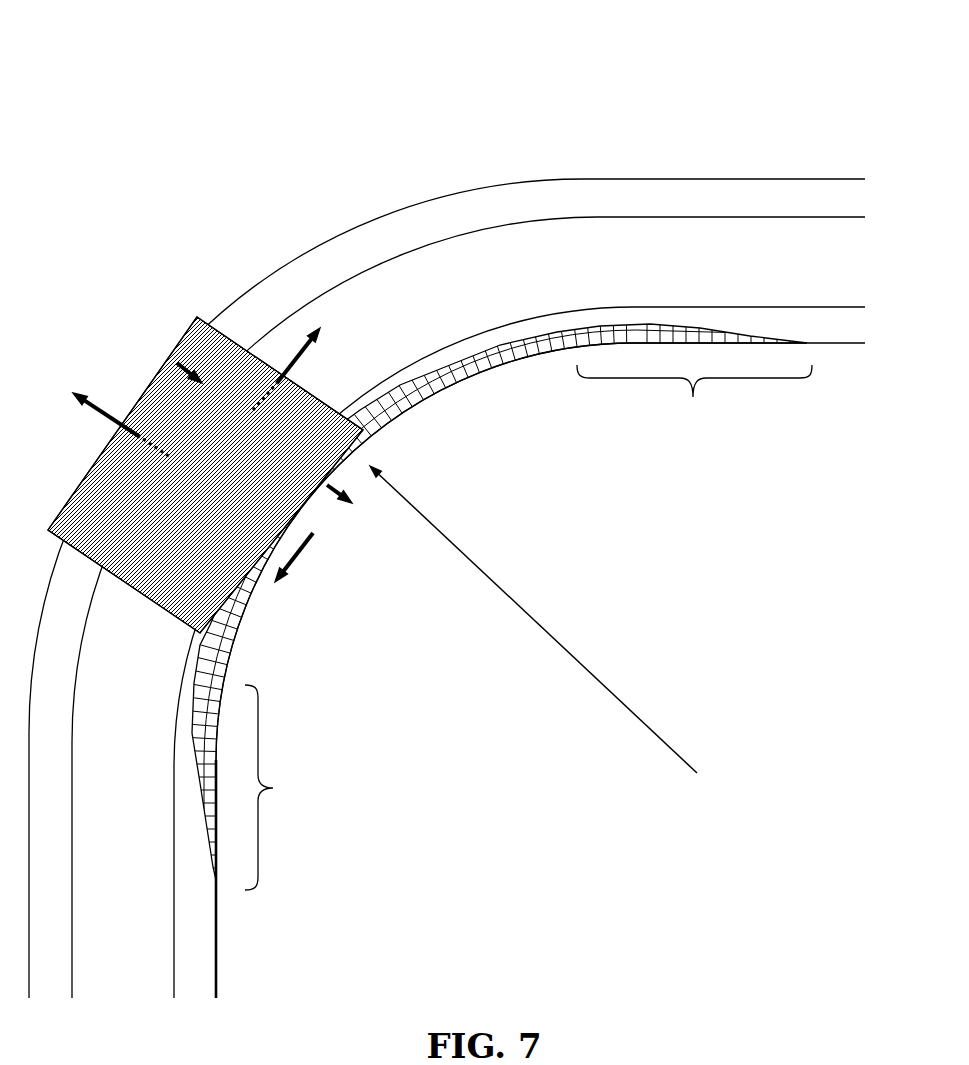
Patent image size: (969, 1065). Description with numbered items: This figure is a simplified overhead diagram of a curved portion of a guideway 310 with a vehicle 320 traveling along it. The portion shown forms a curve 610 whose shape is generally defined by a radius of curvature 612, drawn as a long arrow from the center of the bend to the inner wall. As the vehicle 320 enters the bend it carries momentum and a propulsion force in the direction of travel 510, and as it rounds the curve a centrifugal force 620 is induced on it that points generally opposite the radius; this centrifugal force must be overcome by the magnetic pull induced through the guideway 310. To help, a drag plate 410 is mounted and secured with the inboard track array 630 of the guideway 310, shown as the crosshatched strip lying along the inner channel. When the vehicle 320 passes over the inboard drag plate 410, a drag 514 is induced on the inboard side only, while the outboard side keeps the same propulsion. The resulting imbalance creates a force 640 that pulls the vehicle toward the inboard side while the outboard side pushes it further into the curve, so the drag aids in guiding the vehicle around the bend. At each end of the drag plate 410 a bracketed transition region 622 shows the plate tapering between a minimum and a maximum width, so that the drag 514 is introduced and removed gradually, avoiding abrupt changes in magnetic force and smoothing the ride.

The curve 610 is at (323, 139).
The guideway 310 is at (622, 179).
The vehicle 320 is at (108, 510).
The drag plate 410 is at (417, 397).
The direction of travel 510 is at (298, 369).
The drag 514 is at (299, 572).
The centrifugal force 620 is at (111, 425).
The force 640 is at (193, 350).
The radius of curvature 612 is at (595, 678).
The transition region 622 is at (528, 627).
The inboard track array 630 is at (197, 963).